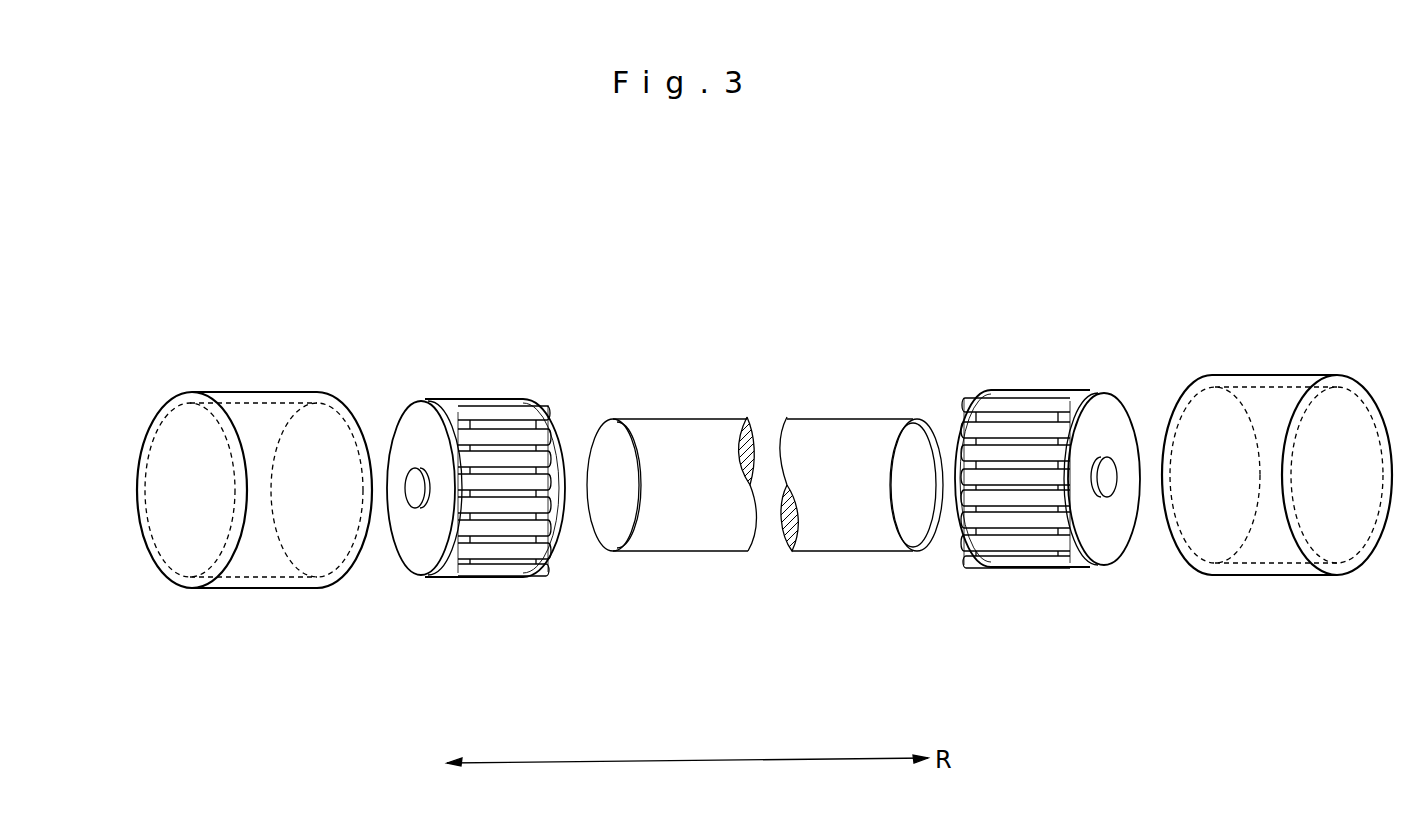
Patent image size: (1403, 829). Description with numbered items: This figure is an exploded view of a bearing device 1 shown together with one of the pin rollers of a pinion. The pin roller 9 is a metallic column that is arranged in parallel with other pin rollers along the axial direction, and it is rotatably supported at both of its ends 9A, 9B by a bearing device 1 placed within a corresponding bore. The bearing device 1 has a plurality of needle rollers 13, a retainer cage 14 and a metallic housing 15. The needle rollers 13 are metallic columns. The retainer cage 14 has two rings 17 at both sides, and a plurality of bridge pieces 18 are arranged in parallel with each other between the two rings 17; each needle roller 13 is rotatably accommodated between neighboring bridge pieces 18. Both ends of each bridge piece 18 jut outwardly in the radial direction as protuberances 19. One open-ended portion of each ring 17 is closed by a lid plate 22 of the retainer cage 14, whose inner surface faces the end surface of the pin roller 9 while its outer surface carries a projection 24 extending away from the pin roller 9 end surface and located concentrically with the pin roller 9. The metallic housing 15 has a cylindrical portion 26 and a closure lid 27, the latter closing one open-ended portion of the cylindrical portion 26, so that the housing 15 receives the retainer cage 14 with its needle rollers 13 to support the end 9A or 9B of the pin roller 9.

The bearing device 1 is at (163, 633).
The pin roller 9 is at (765, 482).
The end of pin roller 9A is at (682, 540).
The end of pin roller 9B is at (850, 540).
The needle roller 13 is at (494, 540).
The retainer cage 14 is at (478, 393).
The metallic housing 15 is at (260, 562).
The ring 17 is at (450, 558).
The bridge piece 18 is at (513, 455).
The protuberance 19 is at (462, 456).
The lid plate 22 is at (417, 560).
The projection 24 is at (413, 500).
The cylindrical portion 26 is at (257, 418).
The closure lid 27 is at (194, 548).